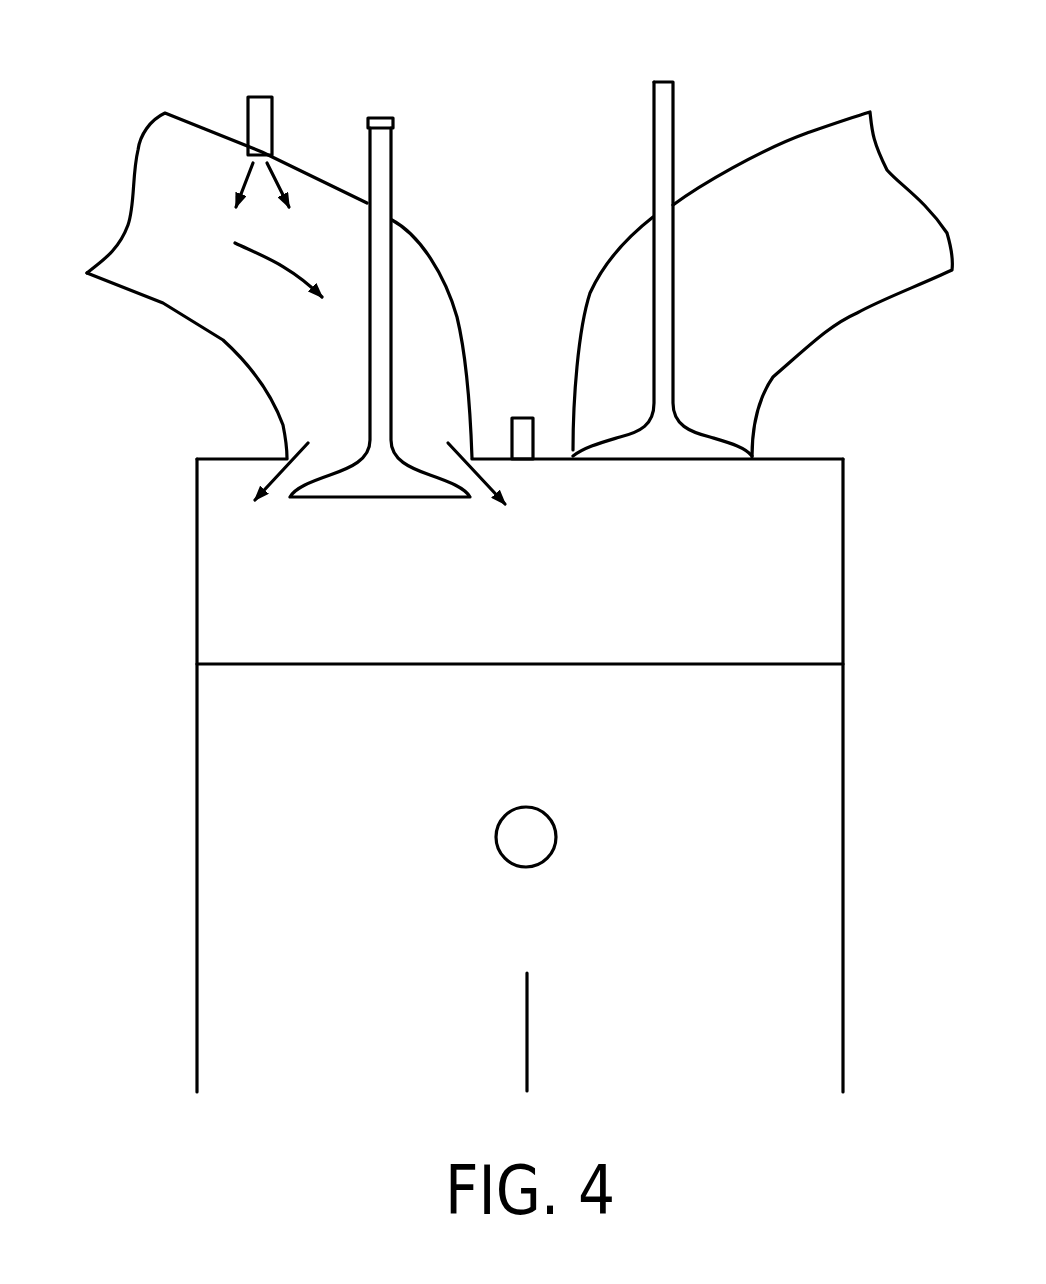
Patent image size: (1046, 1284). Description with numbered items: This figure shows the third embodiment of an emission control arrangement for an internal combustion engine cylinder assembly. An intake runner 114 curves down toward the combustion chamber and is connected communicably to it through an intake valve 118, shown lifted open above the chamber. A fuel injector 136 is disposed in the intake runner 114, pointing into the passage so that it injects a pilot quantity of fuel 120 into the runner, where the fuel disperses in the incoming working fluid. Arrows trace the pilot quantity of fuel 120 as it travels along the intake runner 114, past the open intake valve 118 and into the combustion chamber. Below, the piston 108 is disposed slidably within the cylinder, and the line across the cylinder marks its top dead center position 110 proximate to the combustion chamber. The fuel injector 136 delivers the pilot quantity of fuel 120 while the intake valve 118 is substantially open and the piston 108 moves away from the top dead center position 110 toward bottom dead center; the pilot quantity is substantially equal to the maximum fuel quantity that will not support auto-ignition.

The piston 108 is at (520, 775).
The top dead center position 110 is at (520, 877).
The intake runner 114 is at (50, 196).
The intake valve 118 is at (415, 465).
The pilot quantity of fuel 120 is at (270, 260).
The fuel injector 136 is at (262, 93).